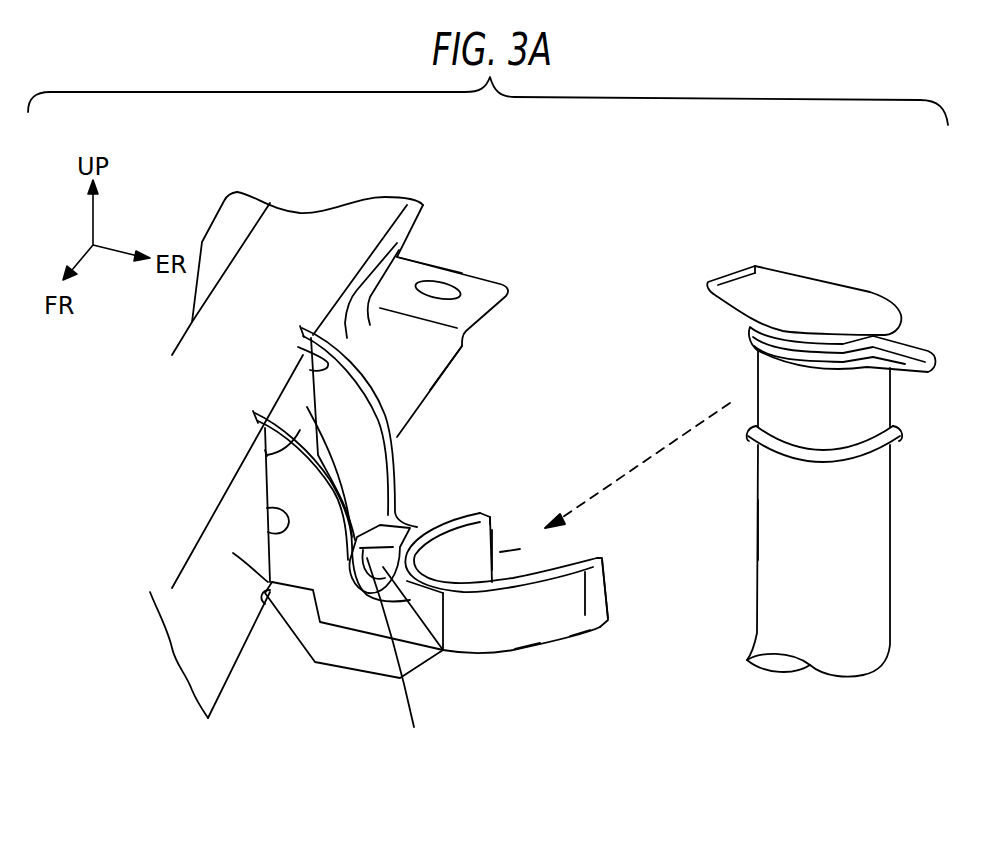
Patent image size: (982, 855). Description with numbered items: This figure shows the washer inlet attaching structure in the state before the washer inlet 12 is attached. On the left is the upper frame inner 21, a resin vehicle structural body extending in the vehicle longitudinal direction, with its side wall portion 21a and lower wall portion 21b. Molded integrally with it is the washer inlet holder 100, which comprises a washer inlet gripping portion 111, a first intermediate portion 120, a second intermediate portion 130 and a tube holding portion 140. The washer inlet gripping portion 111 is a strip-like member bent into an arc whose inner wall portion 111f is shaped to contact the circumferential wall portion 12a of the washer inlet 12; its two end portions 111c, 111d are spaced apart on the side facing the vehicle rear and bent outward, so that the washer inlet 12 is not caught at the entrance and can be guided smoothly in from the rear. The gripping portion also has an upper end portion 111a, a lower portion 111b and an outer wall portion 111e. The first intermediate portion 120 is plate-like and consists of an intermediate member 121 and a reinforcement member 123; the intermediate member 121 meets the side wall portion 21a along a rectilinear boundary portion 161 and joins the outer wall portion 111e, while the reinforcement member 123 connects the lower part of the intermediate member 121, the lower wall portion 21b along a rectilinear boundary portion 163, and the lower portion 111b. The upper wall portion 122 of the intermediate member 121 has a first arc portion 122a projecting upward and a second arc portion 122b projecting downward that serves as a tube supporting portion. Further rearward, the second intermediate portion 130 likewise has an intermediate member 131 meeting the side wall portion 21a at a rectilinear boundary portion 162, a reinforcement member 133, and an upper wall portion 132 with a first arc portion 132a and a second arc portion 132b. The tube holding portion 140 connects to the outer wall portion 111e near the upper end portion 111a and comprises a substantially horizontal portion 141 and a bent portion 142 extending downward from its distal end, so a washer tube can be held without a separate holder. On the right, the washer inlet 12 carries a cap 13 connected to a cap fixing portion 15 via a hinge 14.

The upper frame inner 21 is at (204, 218).
The side wall portion 21a is at (180, 645).
The lower wall portion 21b is at (228, 685).
The washer inlet holder 100 is at (380, 525).
The washer inlet gripping portion 111 is at (564, 604).
The upper end portion 111a is at (450, 514).
The lower portion 111b is at (573, 640).
The end portion 111c is at (497, 520).
The end portion 111d is at (607, 583).
The outer wall portion 111e is at (528, 630).
The inner wall portion 111f is at (460, 558).
The washer inlet 12 is at (811, 452).
The circumferential wall portion 12a is at (762, 545).
The cap 13 is at (889, 310).
The hinge 14 is at (922, 350).
The cap fixing portion 15 is at (870, 372).
The first intermediate portion 120 is at (354, 670).
The intermediate member 121 is at (370, 618).
The upper wall portion 122 is at (168, 505).
The first arc portion 122a is at (267, 455).
The second arc portion 122b is at (233, 553).
The reinforcement member 123 is at (327, 650).
The second intermediate portion 130 is at (226, 464).
The intermediate member 131 is at (305, 345).
The upper wall portion 132 is at (488, 362).
The first arc portion 132a is at (363, 376).
The second arc portion 132b is at (455, 467).
The reinforcement member 133 is at (320, 390).
The tube holding portion 140 is at (416, 658).
The horizontal portion 141 is at (443, 650).
The bent portion 142 is at (399, 658).
The boundary portion 161 is at (267, 508).
The boundary portion 162 is at (298, 347).
The boundary portion 163 is at (267, 596).